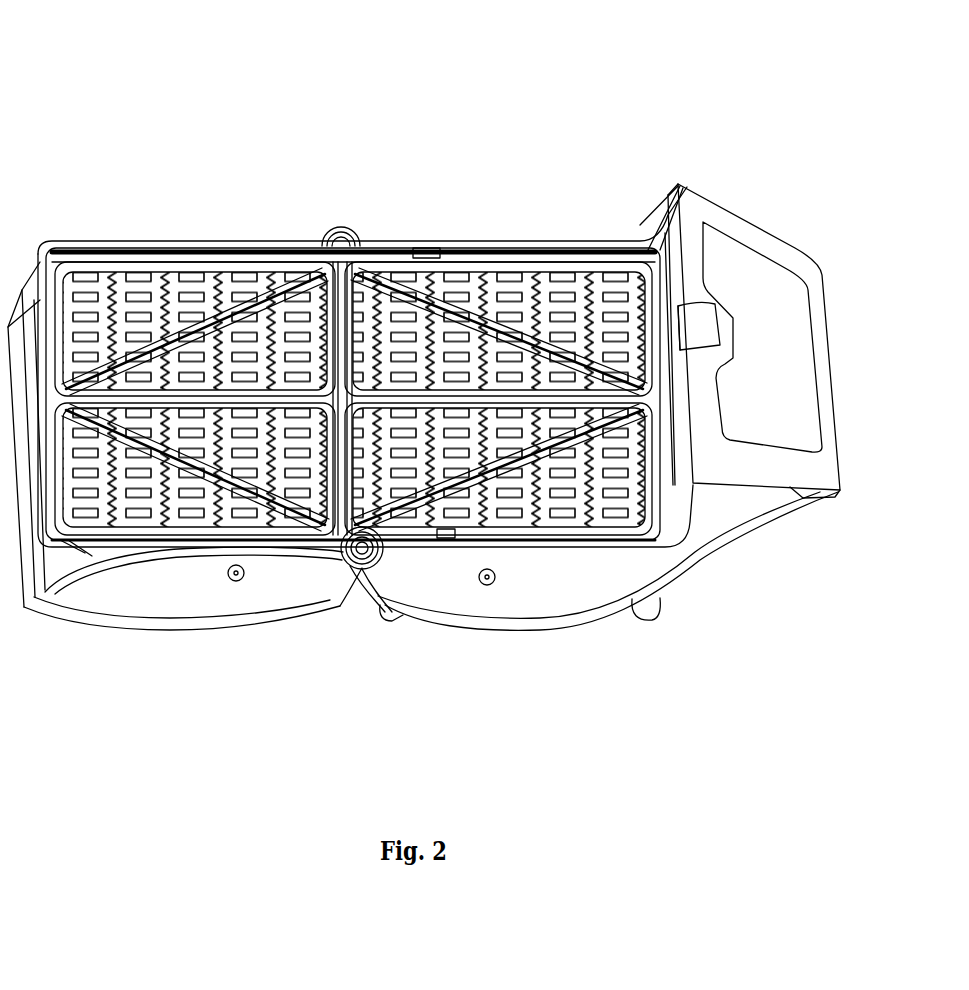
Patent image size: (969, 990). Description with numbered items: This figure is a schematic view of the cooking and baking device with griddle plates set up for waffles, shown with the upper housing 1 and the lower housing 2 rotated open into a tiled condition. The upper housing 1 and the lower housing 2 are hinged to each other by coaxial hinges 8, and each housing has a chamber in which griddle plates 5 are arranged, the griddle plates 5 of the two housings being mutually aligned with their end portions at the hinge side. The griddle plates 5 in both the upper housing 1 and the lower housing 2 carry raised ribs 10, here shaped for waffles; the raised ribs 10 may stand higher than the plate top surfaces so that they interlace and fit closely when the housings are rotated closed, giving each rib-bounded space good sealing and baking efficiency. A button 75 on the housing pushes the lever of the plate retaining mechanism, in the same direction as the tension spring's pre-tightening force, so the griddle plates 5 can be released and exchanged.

The upper housing 1 is at (178, 590).
The lower housing 2 is at (545, 585).
The griddle plates 5 is at (563, 262).
The hinges 8 is at (325, 232).
The raised ribs 10 is at (82, 285).
The button 75 is at (489, 588).